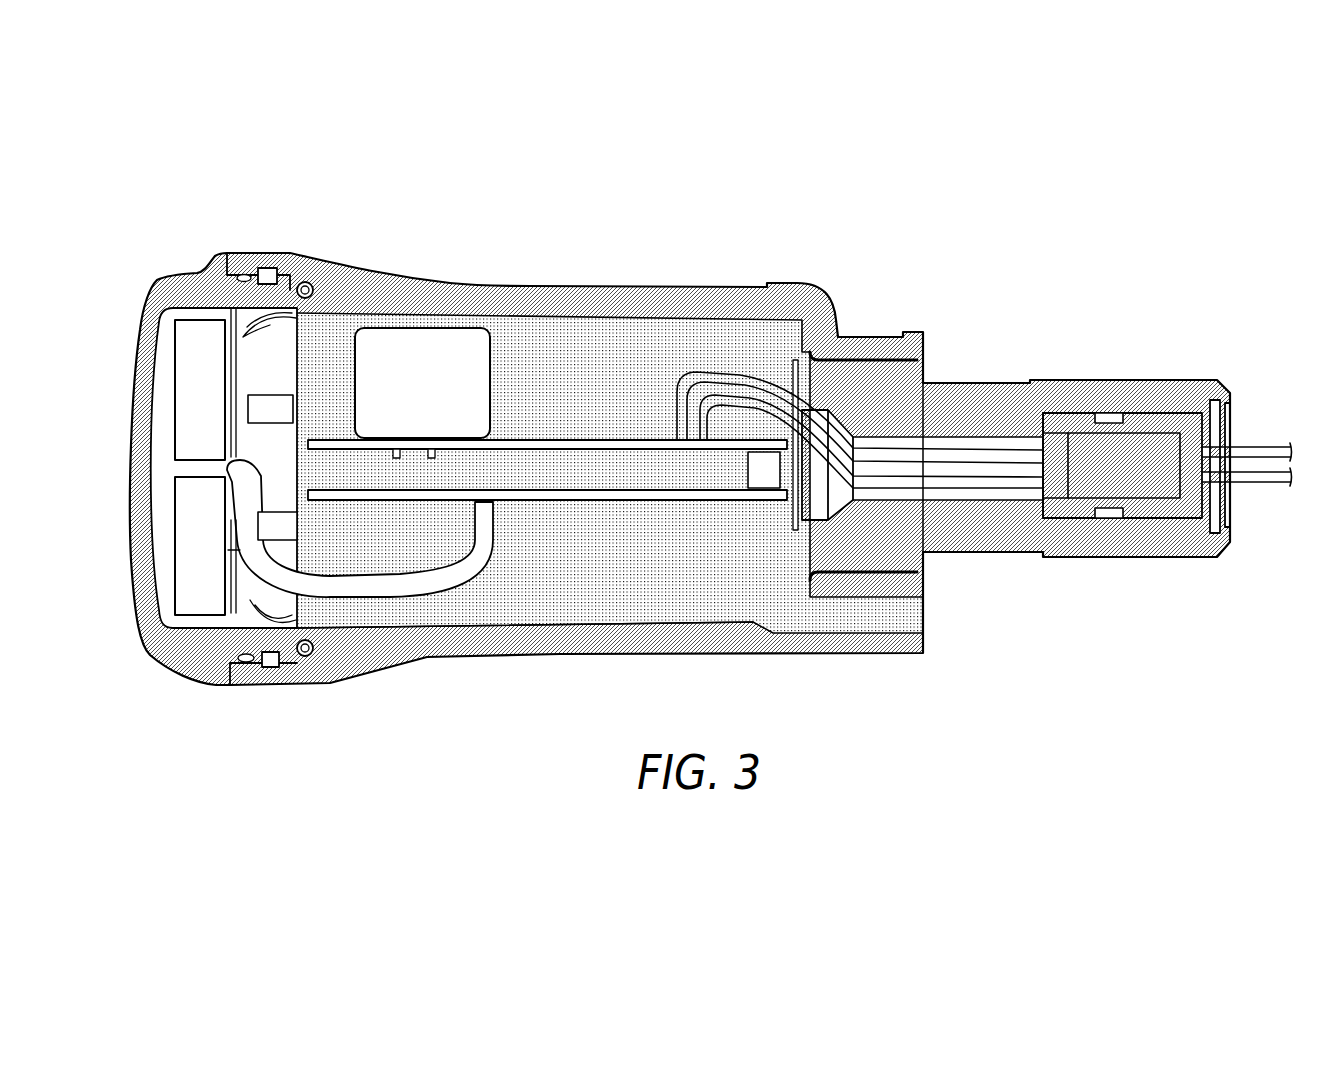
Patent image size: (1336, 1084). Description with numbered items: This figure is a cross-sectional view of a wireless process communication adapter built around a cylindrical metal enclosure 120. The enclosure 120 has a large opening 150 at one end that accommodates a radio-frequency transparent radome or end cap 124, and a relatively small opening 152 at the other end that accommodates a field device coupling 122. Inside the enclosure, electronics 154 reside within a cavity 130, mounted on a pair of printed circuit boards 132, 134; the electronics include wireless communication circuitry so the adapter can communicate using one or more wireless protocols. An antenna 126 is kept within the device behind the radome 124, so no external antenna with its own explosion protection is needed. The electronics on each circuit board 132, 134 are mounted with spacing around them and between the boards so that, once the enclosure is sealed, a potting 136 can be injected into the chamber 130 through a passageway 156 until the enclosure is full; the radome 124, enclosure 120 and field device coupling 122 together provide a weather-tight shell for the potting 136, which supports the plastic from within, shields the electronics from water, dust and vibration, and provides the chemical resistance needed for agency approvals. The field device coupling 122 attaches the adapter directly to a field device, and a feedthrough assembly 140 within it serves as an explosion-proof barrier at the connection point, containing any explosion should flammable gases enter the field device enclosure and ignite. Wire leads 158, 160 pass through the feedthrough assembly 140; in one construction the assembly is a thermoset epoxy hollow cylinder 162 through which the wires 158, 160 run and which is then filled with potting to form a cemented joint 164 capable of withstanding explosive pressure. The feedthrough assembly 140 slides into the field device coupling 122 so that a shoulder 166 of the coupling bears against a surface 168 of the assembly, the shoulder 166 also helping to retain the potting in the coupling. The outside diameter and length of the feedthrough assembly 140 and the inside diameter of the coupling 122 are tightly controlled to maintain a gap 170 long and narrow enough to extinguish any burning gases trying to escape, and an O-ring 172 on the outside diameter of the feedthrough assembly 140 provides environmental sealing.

The enclosure 120 is at (633, 305).
The field device coupling 122 is at (1060, 560).
The radome 124 is at (152, 322).
The antenna 126 is at (187, 600).
The cavity 130 is at (530, 342).
The printed circuit board 132 is at (653, 440).
The printed circuit board 134 is at (567, 502).
The potting 136 is at (710, 595).
The feedthrough assembly 140 is at (1162, 523).
The large opening 150 is at (216, 257).
The small opening 152 is at (927, 372).
The electronics 154 is at (419, 348).
The passageway 156 is at (928, 615).
The wire lead 158 is at (970, 452).
The wire lead 160 is at (973, 490).
The thermoset epoxy hollow cylinder 162 is at (1082, 545).
The cemented joint 164 is at (1167, 453).
The shoulder 166 is at (1042, 560).
The surface 168 is at (1045, 415).
The gap 170 is at (1135, 425).
The O-ring 172 is at (1110, 535).